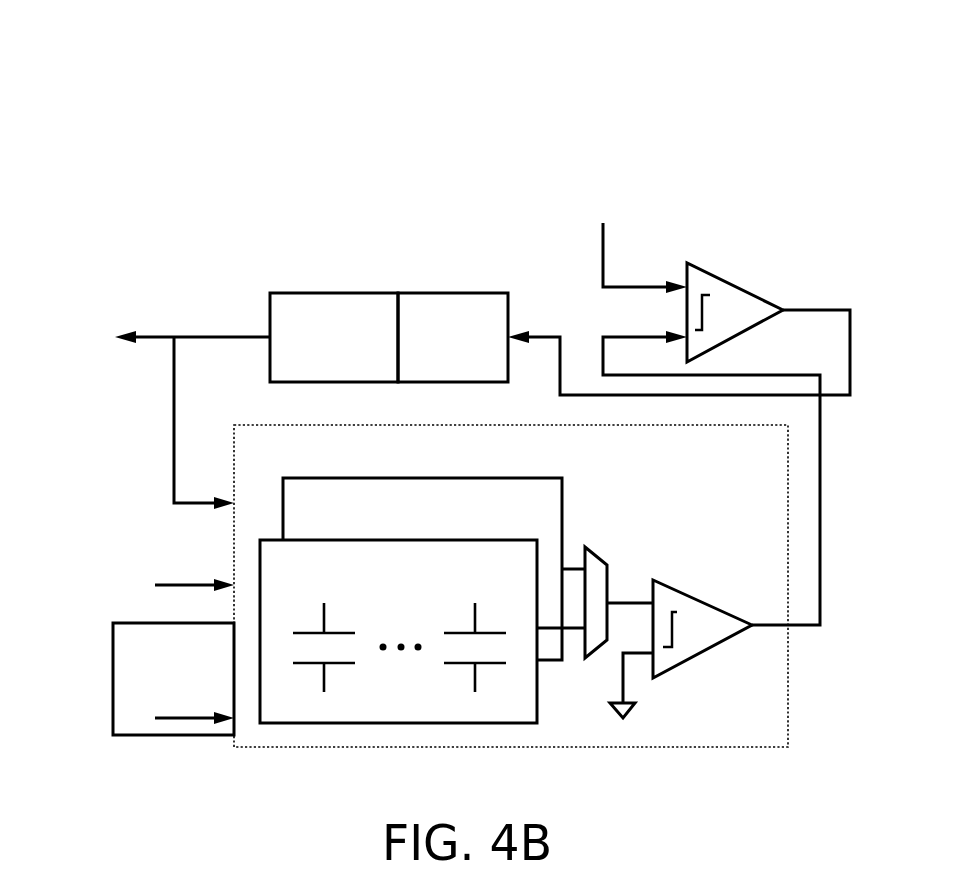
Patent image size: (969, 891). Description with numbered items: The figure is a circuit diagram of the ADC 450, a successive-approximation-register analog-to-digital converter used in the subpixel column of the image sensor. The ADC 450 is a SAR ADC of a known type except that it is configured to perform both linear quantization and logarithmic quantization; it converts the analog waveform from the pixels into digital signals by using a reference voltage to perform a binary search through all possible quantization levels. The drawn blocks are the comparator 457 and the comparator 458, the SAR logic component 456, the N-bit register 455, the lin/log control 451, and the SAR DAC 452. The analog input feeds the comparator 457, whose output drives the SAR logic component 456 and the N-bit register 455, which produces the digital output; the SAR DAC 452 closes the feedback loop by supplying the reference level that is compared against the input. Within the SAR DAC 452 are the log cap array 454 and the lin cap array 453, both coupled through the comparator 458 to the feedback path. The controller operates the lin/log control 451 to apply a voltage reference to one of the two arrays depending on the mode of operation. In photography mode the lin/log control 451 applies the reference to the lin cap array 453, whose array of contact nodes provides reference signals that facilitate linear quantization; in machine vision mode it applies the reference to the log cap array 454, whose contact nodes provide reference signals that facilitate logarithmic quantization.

The ADC 450 is at (248, 86).
The lin/log control 451 is at (113, 677).
The SAR DAC 452 is at (788, 500).
The lin cap array 453 is at (275, 540).
The log cap array 454 is at (562, 505).
The N-bit register component 455 is at (335, 305).
The SAR logic component 456 is at (453, 307).
The comparator 457 is at (748, 288).
The comparator 458 is at (702, 651).